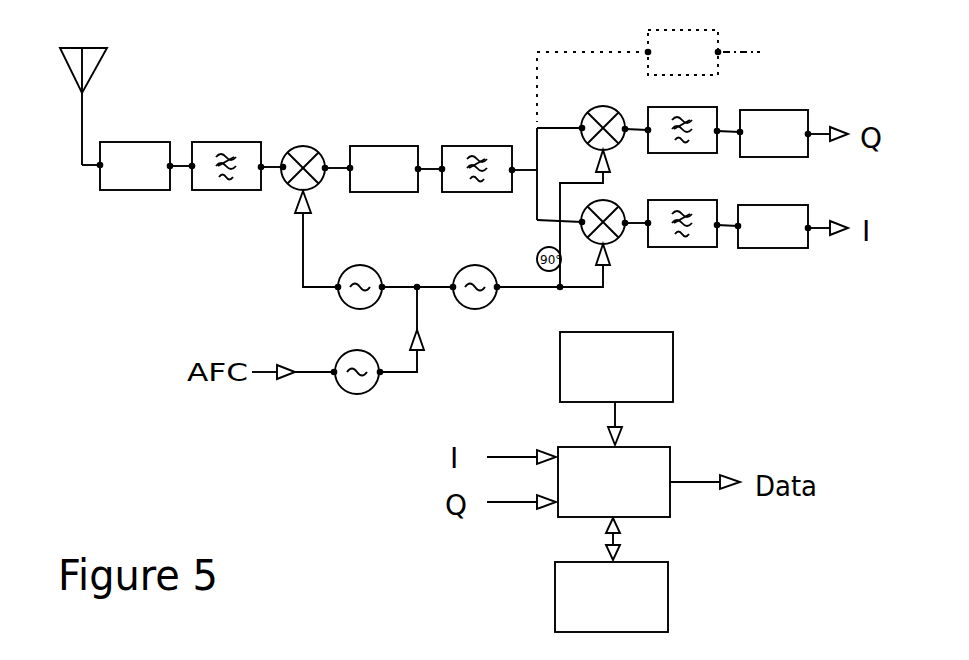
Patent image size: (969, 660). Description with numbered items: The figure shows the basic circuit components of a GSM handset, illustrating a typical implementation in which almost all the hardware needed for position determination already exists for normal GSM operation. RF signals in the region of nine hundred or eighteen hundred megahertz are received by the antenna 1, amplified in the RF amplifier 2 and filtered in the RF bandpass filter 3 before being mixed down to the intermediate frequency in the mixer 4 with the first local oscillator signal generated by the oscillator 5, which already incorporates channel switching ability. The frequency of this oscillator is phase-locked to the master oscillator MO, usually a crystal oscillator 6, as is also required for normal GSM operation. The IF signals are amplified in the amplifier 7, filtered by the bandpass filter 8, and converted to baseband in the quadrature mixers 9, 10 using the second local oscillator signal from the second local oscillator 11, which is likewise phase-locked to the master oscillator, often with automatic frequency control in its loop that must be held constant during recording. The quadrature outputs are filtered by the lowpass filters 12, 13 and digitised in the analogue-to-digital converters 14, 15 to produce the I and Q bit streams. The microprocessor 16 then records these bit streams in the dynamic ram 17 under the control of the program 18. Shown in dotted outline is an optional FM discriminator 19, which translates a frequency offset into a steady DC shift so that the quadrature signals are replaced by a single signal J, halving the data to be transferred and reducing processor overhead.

The antenna 1 is at (97, 72).
The RF amplifier 2 is at (155, 145).
The RF bandpass filter 3 is at (246, 146).
The mixer 4 is at (313, 150).
The oscillator 5 is at (350, 297).
The crystal oscillator 6 is at (344, 360).
The amplifier 7 is at (403, 150).
The bandpass filter 8 is at (497, 150).
The quadrature mixer 9 is at (600, 108).
The quadrature mixer 10 is at (598, 204).
The second local oscillator 11 is at (484, 305).
The lowpass filter 12 is at (703, 111).
The lowpass filter 13 is at (665, 207).
The analogue-to-digital converter 14 is at (795, 113).
The analogue-to-digital converter 15 is at (748, 210).
The microprocessor 16 is at (645, 452).
The dynamic ram 17 is at (643, 568).
The program 18 is at (638, 342).
The FM discriminator 19 is at (655, 37).